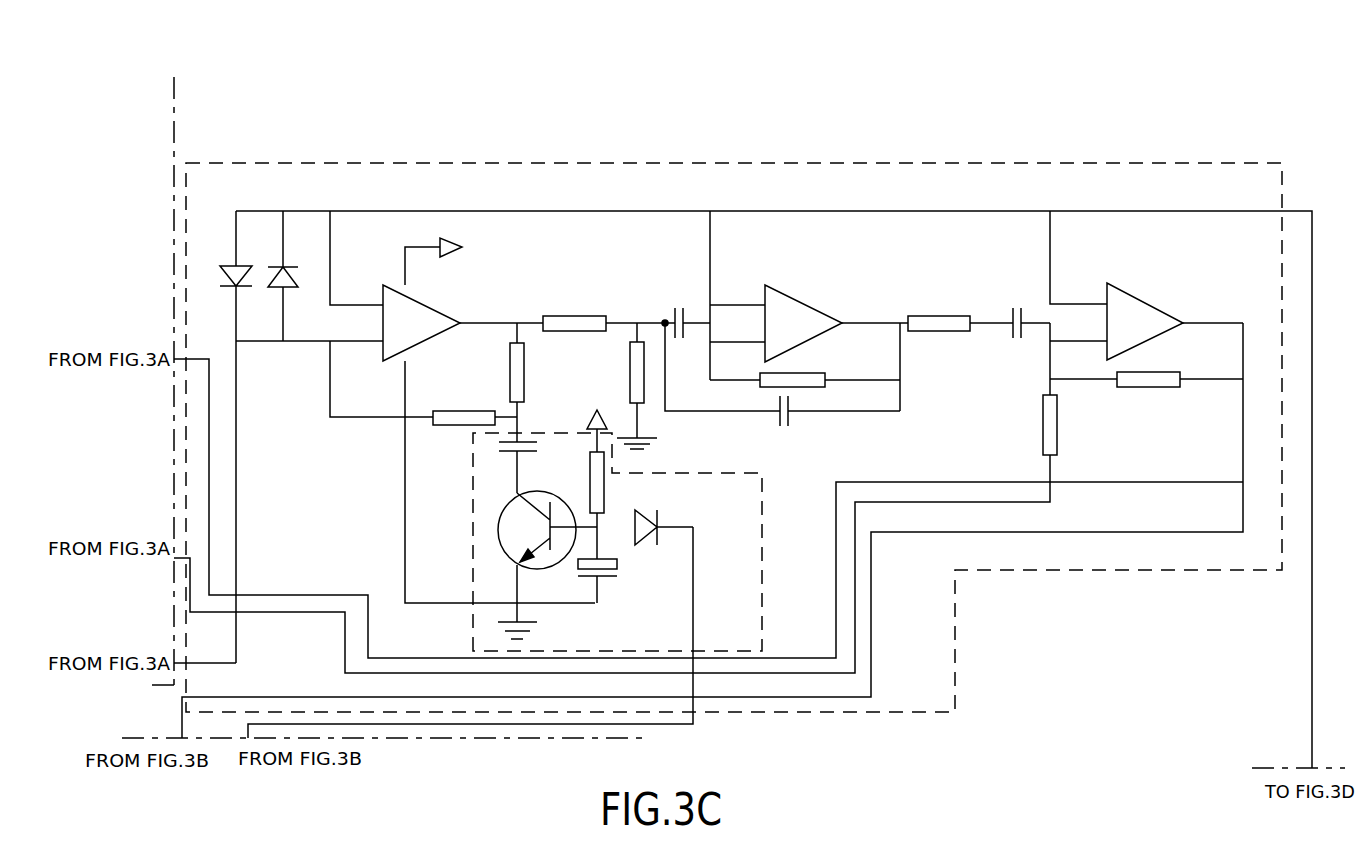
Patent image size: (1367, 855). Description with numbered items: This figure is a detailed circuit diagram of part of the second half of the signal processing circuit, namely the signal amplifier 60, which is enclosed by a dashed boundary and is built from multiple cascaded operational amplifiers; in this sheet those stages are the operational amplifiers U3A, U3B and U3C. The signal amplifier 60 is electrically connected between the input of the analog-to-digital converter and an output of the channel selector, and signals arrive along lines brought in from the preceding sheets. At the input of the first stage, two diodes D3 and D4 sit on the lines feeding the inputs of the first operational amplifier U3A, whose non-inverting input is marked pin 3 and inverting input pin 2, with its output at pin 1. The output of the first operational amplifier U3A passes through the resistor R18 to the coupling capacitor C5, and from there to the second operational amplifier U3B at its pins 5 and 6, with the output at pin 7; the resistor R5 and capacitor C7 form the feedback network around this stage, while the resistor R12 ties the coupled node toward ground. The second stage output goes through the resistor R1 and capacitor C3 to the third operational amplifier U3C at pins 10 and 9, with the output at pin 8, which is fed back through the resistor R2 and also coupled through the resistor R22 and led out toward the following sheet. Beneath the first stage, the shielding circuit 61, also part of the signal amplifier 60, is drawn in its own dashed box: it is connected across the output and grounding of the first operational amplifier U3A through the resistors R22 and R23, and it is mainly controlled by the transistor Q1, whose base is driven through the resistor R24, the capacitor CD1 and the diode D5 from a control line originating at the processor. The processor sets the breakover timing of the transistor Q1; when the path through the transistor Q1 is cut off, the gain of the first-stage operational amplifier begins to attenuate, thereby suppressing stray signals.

The signal amplifier 60 is at (1203, 163).
The shielding circuit 61 is at (745, 498).
The diode D3 is at (231, 437).
The diode D4 is at (290, 276).
The diode D5 is at (664, 514).
The operational amplifier U3A is at (489, 420).
The operational amplifier U3B is at (803, 312).
The operational amplifier U3C is at (1145, 311).
The resistor R1 is at (960, 311).
The resistor R2 is at (1146, 368).
The resistor R5 is at (805, 369).
The resistor R12 is at (623, 386).
The resistor R18 is at (609, 311).
The resistor R22 is at (693, 398).
The resistor R23 is at (506, 408).
The resistor R24 is at (582, 473).
The capacitor C3 is at (1029, 309).
The capacitor C5 is at (689, 309).
The capacitor C7 is at (782, 374).
The electrolytic capacitor CD1 is at (624, 570).
The transistor Q1 is at (539, 561).
The op-amp U3A output pin 1 is at (501, 309).
The op-amp U3A inverting input pin 2 is at (309, 331).
The op-amp U3A non-inverting input pin 3 is at (356, 258).
The op-amp U3B non-inverting input pin 5 is at (737, 293).
The op-amp U3B inverting input pin 6 is at (737, 331).
The op-amp U3B output pin 7 is at (875, 309).
The op-amp U3C output pin 8 is at (1213, 309).
The op-amp U3C inverting input pin 9 is at (1078, 358).
The op-amp U3C non-inverting input pin 10 is at (1078, 257).